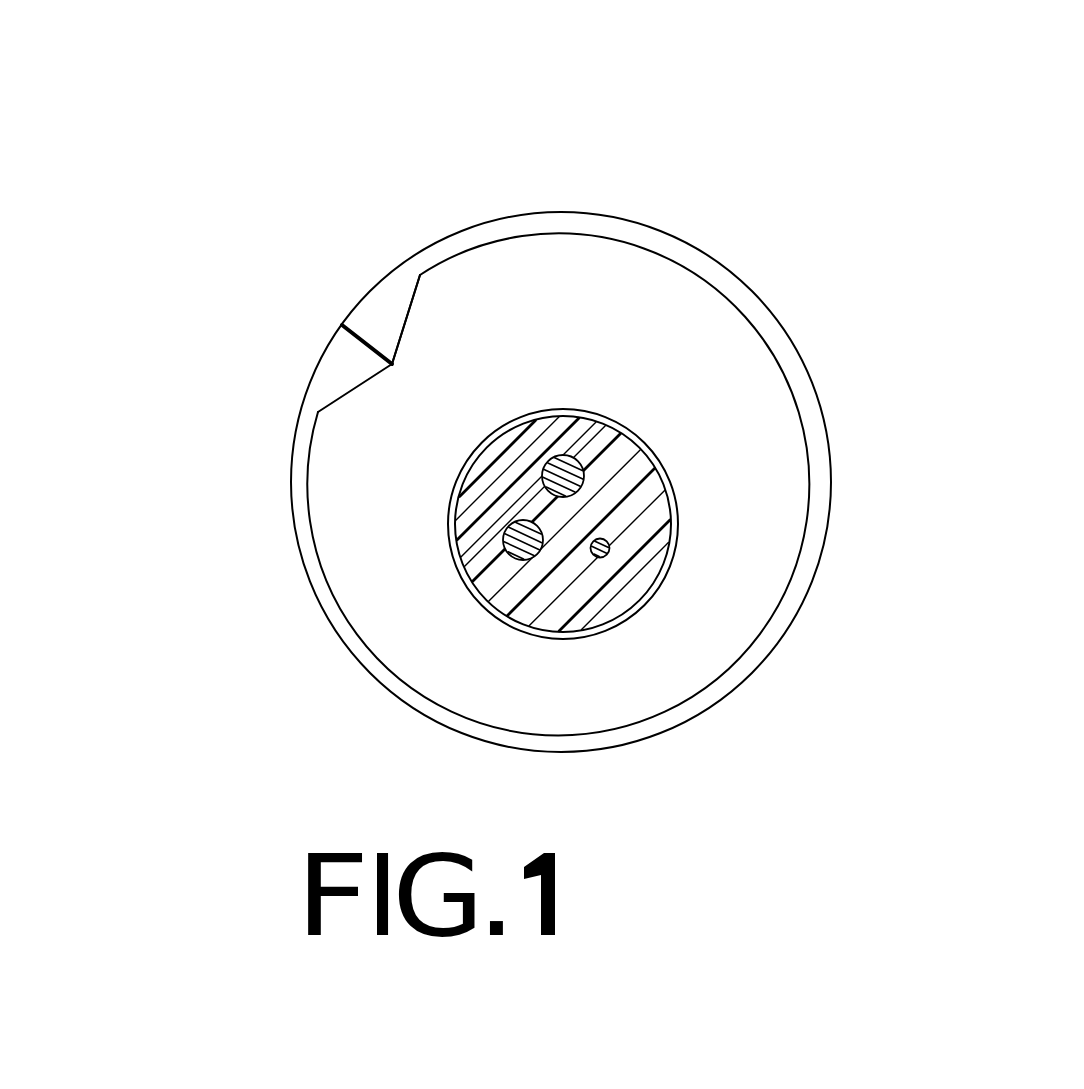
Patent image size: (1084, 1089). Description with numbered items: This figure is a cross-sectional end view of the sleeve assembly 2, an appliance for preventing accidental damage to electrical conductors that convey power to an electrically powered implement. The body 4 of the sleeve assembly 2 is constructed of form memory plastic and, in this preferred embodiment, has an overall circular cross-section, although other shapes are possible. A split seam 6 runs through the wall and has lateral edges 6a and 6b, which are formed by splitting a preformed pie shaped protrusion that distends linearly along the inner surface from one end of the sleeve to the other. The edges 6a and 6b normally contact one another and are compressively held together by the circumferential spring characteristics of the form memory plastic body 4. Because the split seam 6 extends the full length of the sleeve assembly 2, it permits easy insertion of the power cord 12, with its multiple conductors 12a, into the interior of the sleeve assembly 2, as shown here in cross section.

The sleeve assembly 2 is at (562, 192).
The body 4 is at (655, 748).
The split seam 6 is at (342, 325).
The lateral edge 6a is at (365, 347).
The lateral edge 6b is at (373, 338).
The power cord 12 is at (468, 593).
The conductors 12a is at (547, 553).